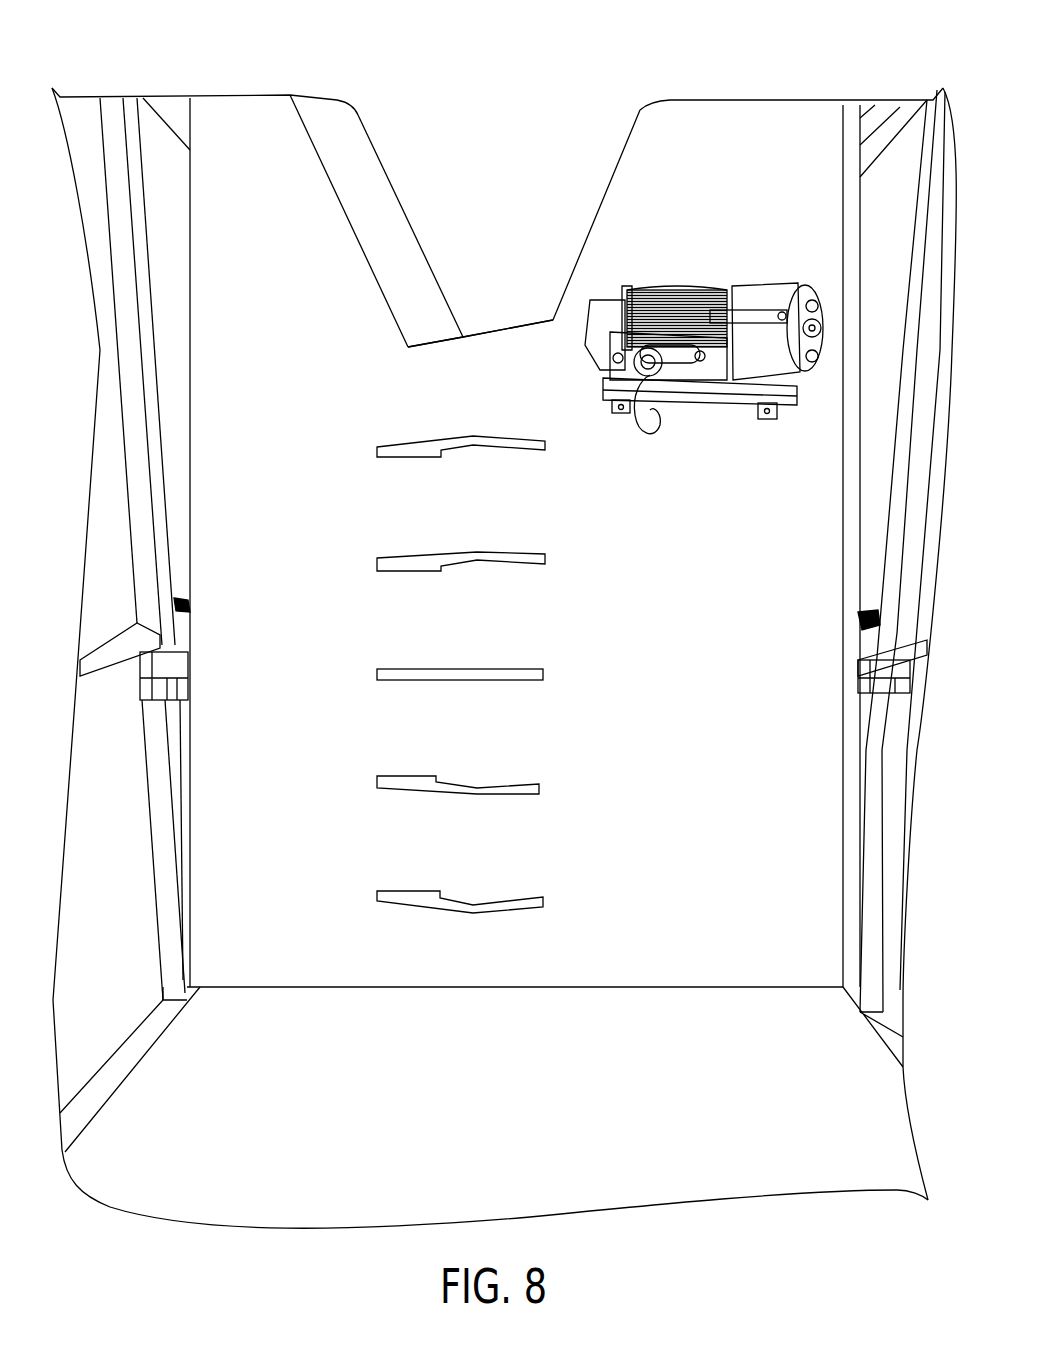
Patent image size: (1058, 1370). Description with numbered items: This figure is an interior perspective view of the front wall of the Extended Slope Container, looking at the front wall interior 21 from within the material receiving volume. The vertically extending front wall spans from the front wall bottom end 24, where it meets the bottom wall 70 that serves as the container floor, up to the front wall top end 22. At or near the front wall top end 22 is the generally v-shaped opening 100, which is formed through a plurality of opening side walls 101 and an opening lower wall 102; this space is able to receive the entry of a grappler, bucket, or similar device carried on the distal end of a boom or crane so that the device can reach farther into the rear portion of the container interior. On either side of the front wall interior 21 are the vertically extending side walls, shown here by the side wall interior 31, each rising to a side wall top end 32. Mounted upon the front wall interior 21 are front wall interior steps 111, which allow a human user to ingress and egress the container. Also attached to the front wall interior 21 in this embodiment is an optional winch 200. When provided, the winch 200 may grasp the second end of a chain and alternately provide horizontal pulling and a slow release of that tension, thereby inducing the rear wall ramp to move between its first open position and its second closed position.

The front wall interior 21 is at (768, 123).
The front wall top end 22 is at (255, 90).
The front wall bottom end 24 is at (557, 1010).
The side wall interior 31 is at (108, 540).
The side wall top end 32 is at (87, 117).
The bottom wall 70 is at (585, 1163).
The generally v-shaped opening 100 is at (493, 163).
The opening side walls 101 is at (345, 233).
The opening lower wall 102 is at (448, 348).
The front wall interior steps 111 is at (549, 672).
The winch 200 is at (700, 428).